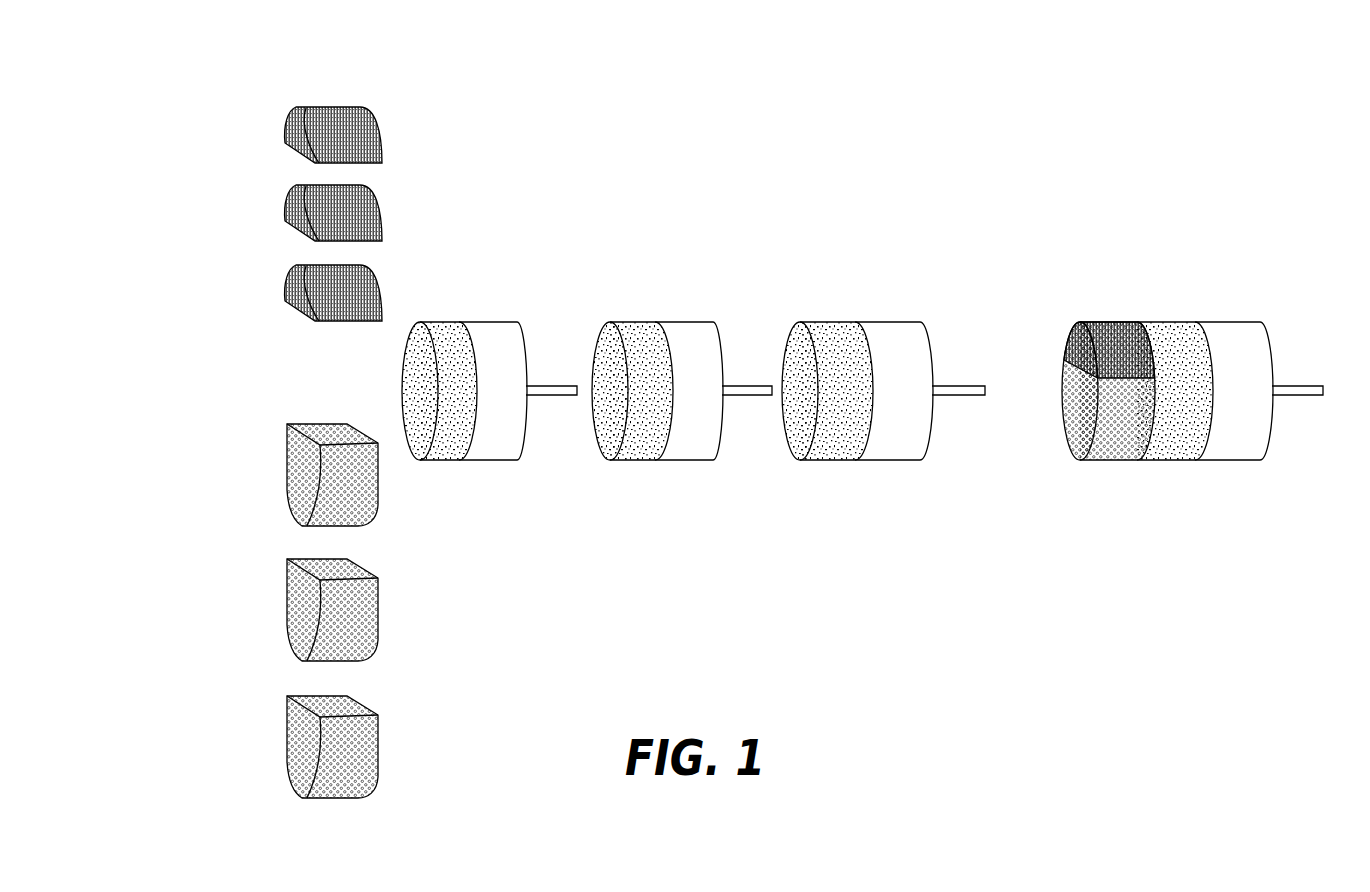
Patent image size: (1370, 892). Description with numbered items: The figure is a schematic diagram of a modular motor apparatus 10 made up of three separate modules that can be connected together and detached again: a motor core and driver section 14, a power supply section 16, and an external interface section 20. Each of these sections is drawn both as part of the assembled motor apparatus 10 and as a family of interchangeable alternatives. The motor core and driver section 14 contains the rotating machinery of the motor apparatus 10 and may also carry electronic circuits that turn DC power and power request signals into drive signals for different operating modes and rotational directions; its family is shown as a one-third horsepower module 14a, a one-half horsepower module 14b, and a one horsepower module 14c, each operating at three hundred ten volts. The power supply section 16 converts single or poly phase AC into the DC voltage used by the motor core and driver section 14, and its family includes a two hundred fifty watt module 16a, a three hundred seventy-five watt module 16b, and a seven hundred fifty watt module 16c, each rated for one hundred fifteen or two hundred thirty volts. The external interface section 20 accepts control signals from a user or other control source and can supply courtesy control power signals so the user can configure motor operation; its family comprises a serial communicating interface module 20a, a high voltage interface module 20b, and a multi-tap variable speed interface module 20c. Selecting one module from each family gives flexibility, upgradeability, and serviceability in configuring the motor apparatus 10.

The motor apparatus 10 is at (1192, 353).
The motor core and driver section 14 is at (1257, 315).
The one-third HP motor core module 14a is at (465, 302).
The one-half HP motor core module 14b is at (639, 308).
The one HP motor core module 14c is at (857, 308).
The power supply section 16 is at (1108, 462).
The 250 watt power supply module 16a is at (286, 451).
The 375 watt power supply module 16b is at (286, 603).
The 750 watt power supply module 16c is at (286, 739).
The external interface section 20 is at (1100, 330).
The serial communicating interface module 20a is at (292, 117).
The high voltage interface module 20b is at (291, 200).
The multi-tap variable speed interface module 20c is at (292, 275).